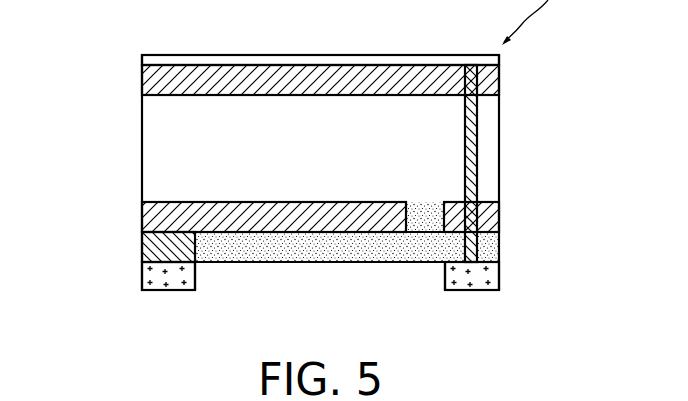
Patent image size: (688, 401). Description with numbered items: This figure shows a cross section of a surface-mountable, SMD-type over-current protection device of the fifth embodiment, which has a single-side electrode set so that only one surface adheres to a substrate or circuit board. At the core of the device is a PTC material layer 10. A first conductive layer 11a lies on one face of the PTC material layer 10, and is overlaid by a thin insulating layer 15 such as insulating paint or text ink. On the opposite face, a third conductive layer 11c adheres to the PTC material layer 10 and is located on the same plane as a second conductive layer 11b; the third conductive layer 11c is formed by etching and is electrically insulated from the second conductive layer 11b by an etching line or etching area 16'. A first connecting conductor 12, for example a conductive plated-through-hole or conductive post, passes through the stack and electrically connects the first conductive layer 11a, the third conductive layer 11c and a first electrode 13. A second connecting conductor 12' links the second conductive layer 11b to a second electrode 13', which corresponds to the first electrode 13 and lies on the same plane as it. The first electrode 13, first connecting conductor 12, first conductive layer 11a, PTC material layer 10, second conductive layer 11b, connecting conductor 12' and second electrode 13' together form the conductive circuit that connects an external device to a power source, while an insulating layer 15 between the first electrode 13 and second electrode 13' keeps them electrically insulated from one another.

The PTC material layer 10 is at (147, 177).
The first conductive layer 11a is at (340, 63).
The second conductive layer 11b is at (262, 233).
The third conductive layer 11c is at (494, 212).
The first connecting conductor 12 is at (514, 163).
The connecting conductor 12' is at (137, 245).
The first electrode 13 is at (504, 277).
The second electrode 13' is at (137, 277).
The insulating layer 15 is at (173, 62).
The etching area 16' is at (425, 272).